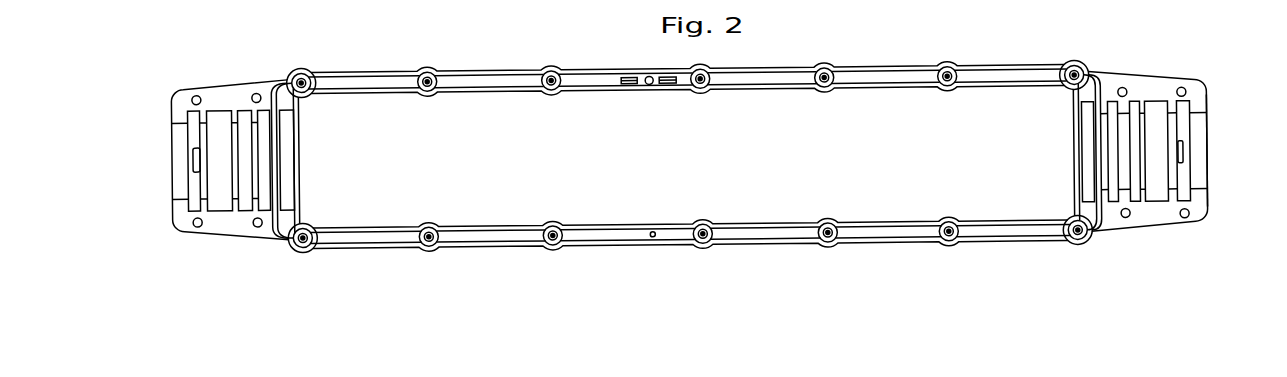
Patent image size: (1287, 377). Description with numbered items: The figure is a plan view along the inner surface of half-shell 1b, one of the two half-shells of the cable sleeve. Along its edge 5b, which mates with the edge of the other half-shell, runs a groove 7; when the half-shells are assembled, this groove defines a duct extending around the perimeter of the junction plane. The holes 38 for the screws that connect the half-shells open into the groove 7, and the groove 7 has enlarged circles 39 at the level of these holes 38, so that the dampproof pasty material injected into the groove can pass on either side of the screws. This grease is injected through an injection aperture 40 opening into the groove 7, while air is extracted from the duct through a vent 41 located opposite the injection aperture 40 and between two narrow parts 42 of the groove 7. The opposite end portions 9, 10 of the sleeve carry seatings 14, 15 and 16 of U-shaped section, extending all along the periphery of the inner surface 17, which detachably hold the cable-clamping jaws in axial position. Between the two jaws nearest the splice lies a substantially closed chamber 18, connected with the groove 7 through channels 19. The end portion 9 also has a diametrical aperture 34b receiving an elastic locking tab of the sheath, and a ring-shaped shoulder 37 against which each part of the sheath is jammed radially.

The half-shell 1b is at (768, 69).
The edge 5b is at (852, 67).
The groove 7 is at (890, 77).
The end portion 9 is at (1172, 80).
The end portion 10 is at (222, 235).
The seating 14 is at (1093, 152).
The seating 15 is at (1113, 167).
The seating 16 is at (1132, 155).
The inner surface 17 is at (1158, 165).
The chamber 18 is at (275, 157).
The channels 19 is at (1098, 83).
The diametrical aperture 34b is at (1183, 148).
The ring-shaped shoulder 37 is at (1208, 188).
The holes 38 is at (428, 76).
The enlarged circles 39 is at (835, 247).
The injection aperture 40 is at (651, 238).
The vent 41 is at (648, 77).
The narrow parts 42 is at (673, 84).